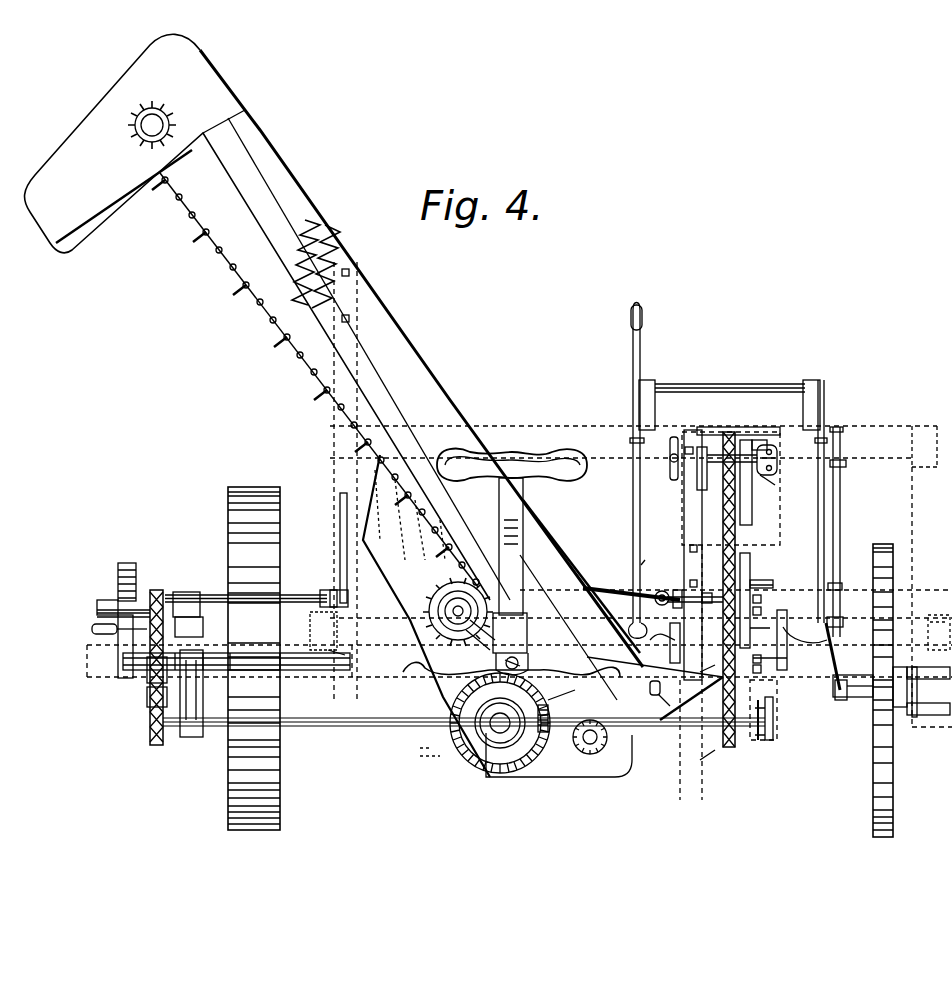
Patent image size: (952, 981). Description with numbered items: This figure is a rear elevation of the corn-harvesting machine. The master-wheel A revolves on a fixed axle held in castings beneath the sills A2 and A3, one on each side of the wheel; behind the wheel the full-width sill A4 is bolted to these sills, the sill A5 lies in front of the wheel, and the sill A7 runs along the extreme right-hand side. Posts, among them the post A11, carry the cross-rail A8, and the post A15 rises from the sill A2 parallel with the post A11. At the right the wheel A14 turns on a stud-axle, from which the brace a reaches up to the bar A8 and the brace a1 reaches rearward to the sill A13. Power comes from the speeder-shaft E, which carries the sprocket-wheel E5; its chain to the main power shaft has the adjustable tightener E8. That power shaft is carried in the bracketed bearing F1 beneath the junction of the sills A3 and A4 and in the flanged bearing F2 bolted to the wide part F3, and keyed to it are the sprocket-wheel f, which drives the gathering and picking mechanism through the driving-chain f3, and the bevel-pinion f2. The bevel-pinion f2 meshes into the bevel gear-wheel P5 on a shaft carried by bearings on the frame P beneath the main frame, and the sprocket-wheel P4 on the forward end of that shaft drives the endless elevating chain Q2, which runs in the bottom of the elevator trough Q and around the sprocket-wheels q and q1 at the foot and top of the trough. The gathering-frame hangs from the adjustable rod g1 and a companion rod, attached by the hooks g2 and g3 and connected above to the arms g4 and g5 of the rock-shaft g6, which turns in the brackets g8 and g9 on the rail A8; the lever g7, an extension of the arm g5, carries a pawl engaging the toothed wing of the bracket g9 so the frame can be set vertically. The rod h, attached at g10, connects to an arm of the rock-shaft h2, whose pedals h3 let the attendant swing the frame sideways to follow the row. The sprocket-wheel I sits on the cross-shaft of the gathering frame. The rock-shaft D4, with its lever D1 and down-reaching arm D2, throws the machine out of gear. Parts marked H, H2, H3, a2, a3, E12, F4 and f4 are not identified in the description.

The elevator trough Q is at (334, 350).
The endless elevating chain Q2 is at (315, 380).
The sprocket-wheel q is at (135, 125).
The sill A3 is at (350, 335).
The sill A5 is at (333, 424).
The cross-rail A8 is at (560, 430).
The frame P is at (530, 600).
The post A15 is at (395, 612).
The wheel A14 is at (331, 641).
The sprocket-wheel P4 is at (440, 600).
The pedals h3 is at (515, 680).
The rock-shaft h2 is at (523, 665).
The bevel gear-wheel P5 is at (541, 725).
The bearing F4 is at (430, 755).
The bracketed bearing F1 is at (378, 730).
The flanged bearing F2 is at (773, 722).
The wide part F3 is at (758, 745).
The master-wheel A is at (275, 557).
The post A11 is at (898, 690).
The sill A4 is at (833, 688).
The sill A13 is at (795, 625).
The sill A7 is at (937, 629).
The speeder-shaft E is at (152, 740).
The sprocket-wheel E5 is at (155, 597).
The adjustable tightener E8 is at (150, 680).
The bearing E12 is at (150, 702).
The rock-shaft D4 is at (251, 593).
The down-reaching arm D2 is at (178, 598).
The lever D1 is at (338, 545).
The sill A2 is at (221, 641).
The arm g5 is at (633, 392).
The lever g7 is at (641, 358).
The bracket g8 is at (655, 404).
The rock-shaft g6 is at (728, 393).
The bracket g9 is at (806, 400).
The arm g4 is at (826, 393).
The hook g2 is at (825, 648).
The brace a is at (842, 520).
The cross bar H2 is at (738, 424).
The standard H is at (729, 589).
The bracket H3 is at (698, 535).
The brace a1 is at (778, 464).
The arm a2 is at (776, 485).
The bracket a3 is at (768, 445).
The sprocket-wheel I is at (668, 450).
The adjustable rod g1 is at (648, 555).
The rod h is at (653, 588).
The attachment point g10 is at (664, 591).
The hook g3 is at (654, 643).
The sprocket-wheel f is at (636, 688).
The bevel-pinion f2 is at (561, 695).
The driving-chain f3 is at (706, 664).
The lever arm f4 is at (707, 757).
The sprocket-wheel q1 is at (661, 692).